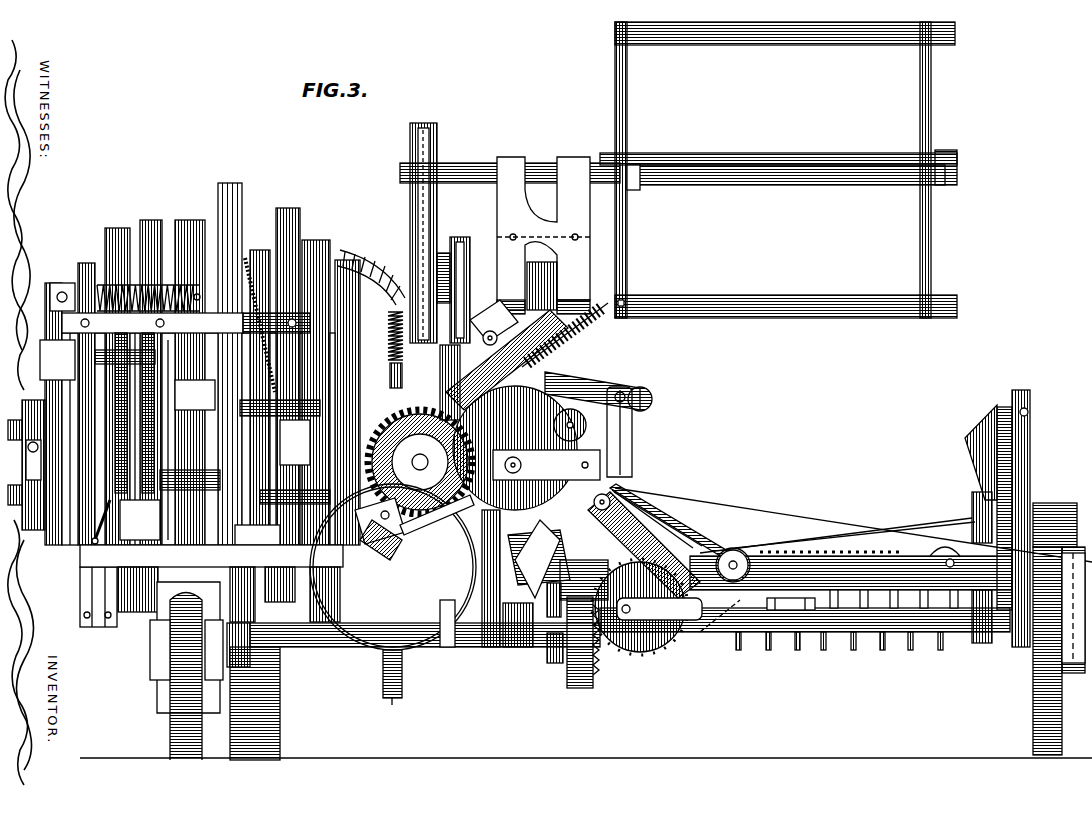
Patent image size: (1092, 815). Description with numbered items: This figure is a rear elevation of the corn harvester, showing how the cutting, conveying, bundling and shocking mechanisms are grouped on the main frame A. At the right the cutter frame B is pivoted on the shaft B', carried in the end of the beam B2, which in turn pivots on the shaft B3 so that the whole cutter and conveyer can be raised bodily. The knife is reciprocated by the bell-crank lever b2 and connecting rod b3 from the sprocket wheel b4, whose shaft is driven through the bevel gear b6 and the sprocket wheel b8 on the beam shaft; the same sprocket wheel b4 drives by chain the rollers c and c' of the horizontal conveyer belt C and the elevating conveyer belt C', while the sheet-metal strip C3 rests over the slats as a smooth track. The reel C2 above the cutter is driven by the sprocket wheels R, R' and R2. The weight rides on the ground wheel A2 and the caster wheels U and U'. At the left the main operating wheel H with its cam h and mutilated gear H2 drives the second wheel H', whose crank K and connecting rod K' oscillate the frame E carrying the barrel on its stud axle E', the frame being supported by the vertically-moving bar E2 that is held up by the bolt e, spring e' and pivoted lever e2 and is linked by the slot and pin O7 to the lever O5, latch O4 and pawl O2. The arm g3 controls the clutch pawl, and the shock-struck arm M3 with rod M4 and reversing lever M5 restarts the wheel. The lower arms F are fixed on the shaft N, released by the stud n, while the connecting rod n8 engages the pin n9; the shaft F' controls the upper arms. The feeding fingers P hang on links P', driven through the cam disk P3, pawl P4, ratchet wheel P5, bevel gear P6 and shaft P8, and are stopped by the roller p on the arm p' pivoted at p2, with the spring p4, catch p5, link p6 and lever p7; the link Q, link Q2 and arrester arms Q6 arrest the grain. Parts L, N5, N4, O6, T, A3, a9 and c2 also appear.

The reel C2 is at (778, 170).
The sprocket wheel R is at (408, 233).
The sprocket wheel R2 is at (437, 262).
The sprocket wheel R' is at (470, 285).
The crank K is at (42, 465).
The connecting rod K' is at (24, 462).
The main frame A is at (80, 585).
The mutilated gear H2 is at (105, 268).
The arm g3 is at (150, 232).
The vertically-moving bar E2 is at (233, 200).
The connecting rod n8 is at (286, 215).
The pin n9 is at (322, 233).
The pivoted lever e2 is at (50, 318).
The bolt e is at (148, 288).
The main operating wheel H is at (186, 313).
The spring e' is at (188, 323).
The cam h is at (140, 355).
The second wheel H' is at (153, 413).
The slot and pin O7 is at (247, 258).
The stud or wheel n is at (200, 419).
The bar L is at (234, 478).
The frame E is at (267, 487).
The stud-axle E' is at (268, 507).
The lever or arm M3 is at (211, 556).
The rod M4 is at (92, 542).
The reversing lever M5 is at (152, 531).
The bar N5 is at (262, 560).
The shaft F' is at (326, 557).
The caster wheel U' is at (179, 671).
The ground wheel A2 is at (280, 683).
The beam N4 is at (308, 647).
The lever p7 is at (371, 273).
The lever O5 is at (405, 253).
The shaft N is at (367, 325).
The spring-pressed latch O4 is at (371, 345).
The pawl O2 is at (359, 365).
The link p6 is at (421, 379).
The pin O6 is at (447, 350).
The feeding fingers P is at (468, 496).
The shaft P8 is at (420, 462).
The cam-disk P3 is at (526, 448).
The pawl P4 is at (577, 463).
The pivot T is at (579, 477).
The ratchet wheel P5 is at (474, 440).
The anti-friction roller p is at (576, 425).
The standard A3 is at (632, 440).
The links P' is at (598, 387).
The arm p' is at (572, 367).
The spring p4 is at (575, 333).
The catch p5 is at (555, 310).
The pivot p2 is at (507, 355).
The arms F is at (393, 577).
The link Q is at (380, 529).
The link Q2 is at (439, 531).
The arrester arms Q6 is at (539, 559).
The bevel gear P6 is at (469, 525).
The beam B2 is at (522, 648).
The shaft B3 is at (520, 660).
The hanger a9 is at (399, 677).
The sprocket wheel b8 is at (552, 665).
The shaft B' is at (788, 646).
The bevel gear b6 is at (604, 660).
The sprocket wheel b4 is at (640, 607).
The connecting rod b3 is at (659, 605).
The bell-crank lever b2 is at (768, 604).
The cutter frame B is at (821, 518).
The roller c' is at (643, 506).
The sheet-metal strip C3 is at (818, 540).
The elevating conveyer belt C' is at (853, 525).
The roller c is at (735, 546).
The conveyer belt C is at (855, 526).
The pegs c2 is at (940, 648).
The caster wheel U is at (1059, 651).